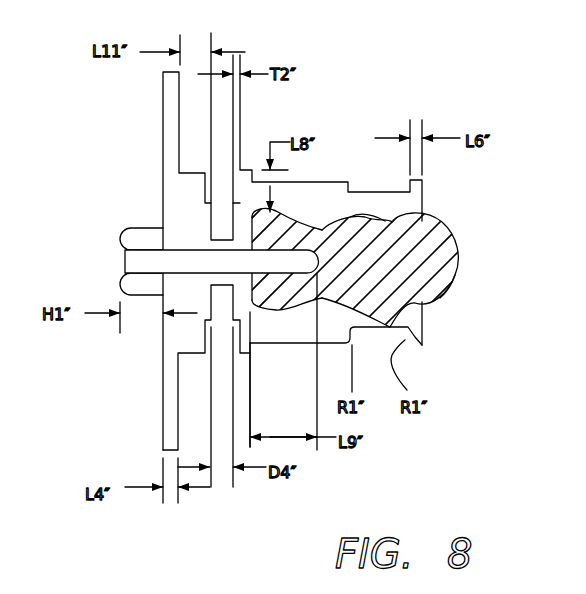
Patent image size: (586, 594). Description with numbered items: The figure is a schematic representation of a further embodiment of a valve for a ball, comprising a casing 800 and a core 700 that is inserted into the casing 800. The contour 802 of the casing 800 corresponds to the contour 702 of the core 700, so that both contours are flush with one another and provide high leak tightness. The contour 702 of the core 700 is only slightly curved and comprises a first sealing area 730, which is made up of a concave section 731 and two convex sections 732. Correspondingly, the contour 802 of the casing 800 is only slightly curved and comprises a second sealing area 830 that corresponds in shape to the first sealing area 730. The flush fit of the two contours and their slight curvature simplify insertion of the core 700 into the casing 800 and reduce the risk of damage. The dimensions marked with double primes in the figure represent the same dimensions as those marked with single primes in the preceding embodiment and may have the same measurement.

The core 700 is at (433, 247).
The contour of core 702 is at (457, 277).
The first sealing area 730 is at (349, 176).
The concave section 731 is at (327, 218).
The convex sections 732 is at (272, 210).
The casing 800 is at (133, 150).
The contour of casing 802 is at (390, 325).
The second sealing area 830 is at (333, 318).